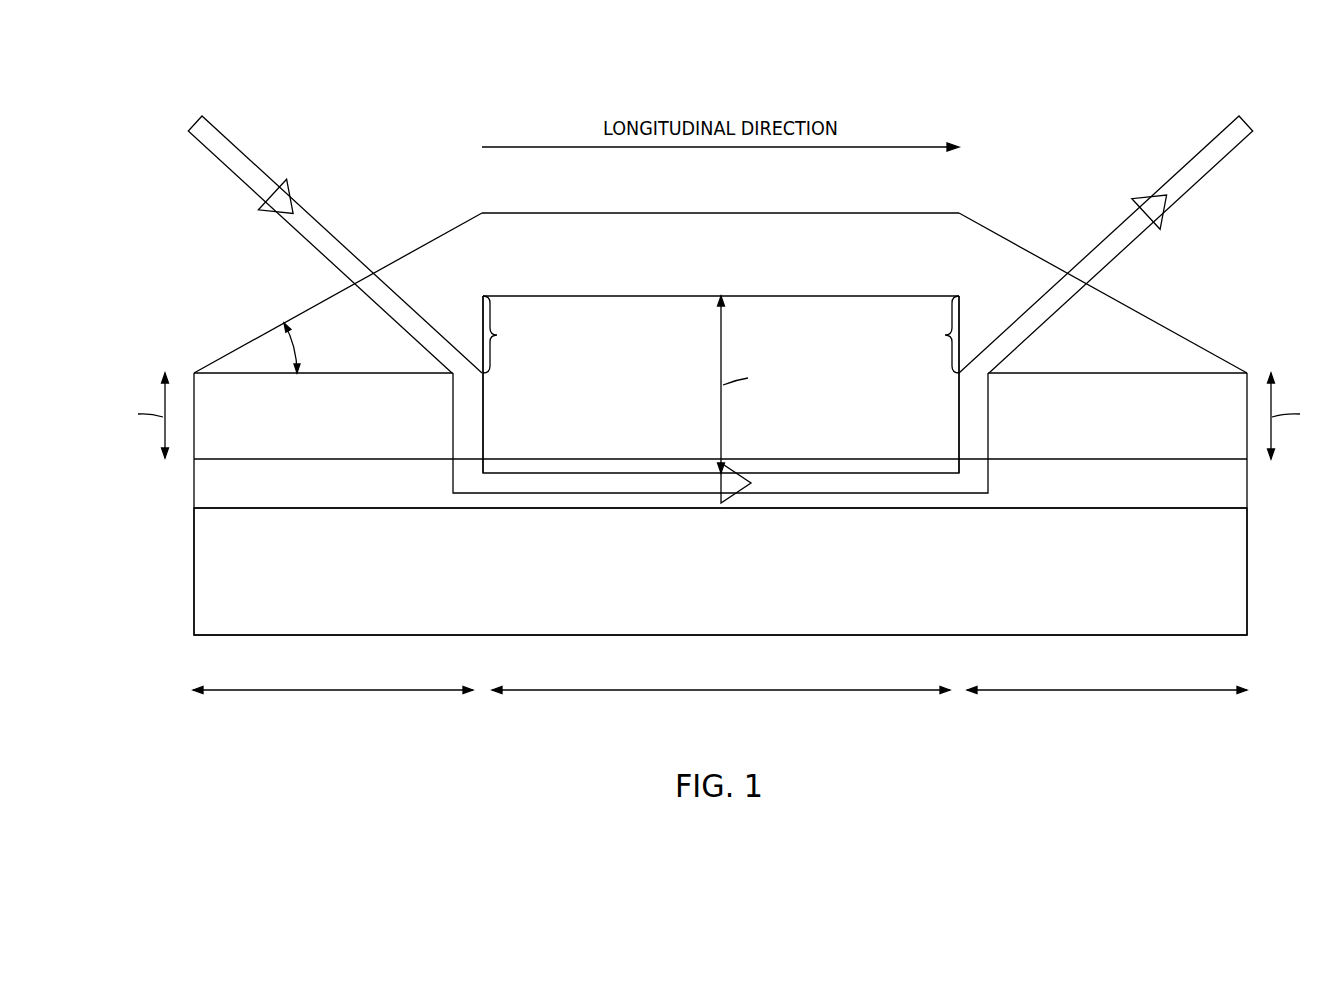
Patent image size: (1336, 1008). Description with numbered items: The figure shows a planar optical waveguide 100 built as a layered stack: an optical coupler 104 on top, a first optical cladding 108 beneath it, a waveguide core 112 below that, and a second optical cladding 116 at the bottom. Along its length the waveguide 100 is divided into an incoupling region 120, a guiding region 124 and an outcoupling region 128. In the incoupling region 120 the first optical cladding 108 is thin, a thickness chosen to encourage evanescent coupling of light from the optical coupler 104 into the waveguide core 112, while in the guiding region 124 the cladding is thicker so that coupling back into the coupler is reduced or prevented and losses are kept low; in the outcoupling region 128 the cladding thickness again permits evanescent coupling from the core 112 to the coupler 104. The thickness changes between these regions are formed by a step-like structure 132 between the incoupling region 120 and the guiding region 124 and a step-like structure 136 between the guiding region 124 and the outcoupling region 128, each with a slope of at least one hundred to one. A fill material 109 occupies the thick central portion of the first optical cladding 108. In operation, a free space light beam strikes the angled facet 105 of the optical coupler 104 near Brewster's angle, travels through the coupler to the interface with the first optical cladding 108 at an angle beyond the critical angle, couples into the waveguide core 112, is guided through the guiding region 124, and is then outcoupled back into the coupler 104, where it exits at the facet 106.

The planar optical waveguide 100 is at (1120, 120).
The optical coupler 104 is at (722, 213).
The facet 105 is at (310, 306).
The facet 106 is at (1160, 324).
The first optical cladding 108 is at (193, 383).
The fill material 109 is at (822, 296).
The waveguide core 112 is at (194, 480).
The second optical cladding 116 is at (194, 563).
The incoupling region 120 is at (333, 692).
The guiding region 124 is at (308, 210).
The outcoupling region 128 is at (1107, 692).
The step-like structure 132 is at (510, 384).
The step-like structure 136 is at (932, 384).